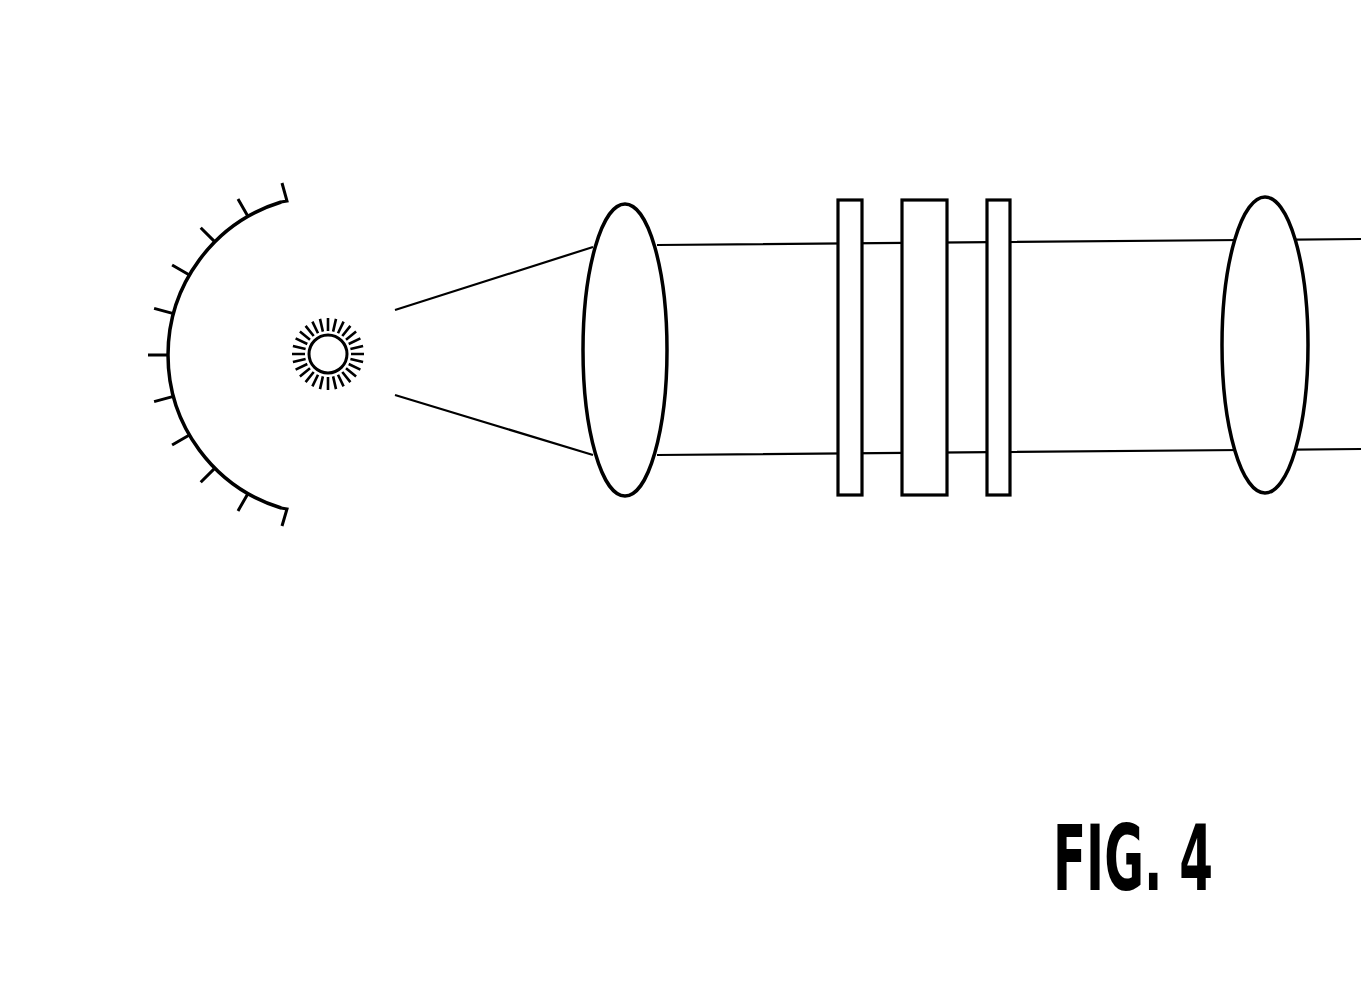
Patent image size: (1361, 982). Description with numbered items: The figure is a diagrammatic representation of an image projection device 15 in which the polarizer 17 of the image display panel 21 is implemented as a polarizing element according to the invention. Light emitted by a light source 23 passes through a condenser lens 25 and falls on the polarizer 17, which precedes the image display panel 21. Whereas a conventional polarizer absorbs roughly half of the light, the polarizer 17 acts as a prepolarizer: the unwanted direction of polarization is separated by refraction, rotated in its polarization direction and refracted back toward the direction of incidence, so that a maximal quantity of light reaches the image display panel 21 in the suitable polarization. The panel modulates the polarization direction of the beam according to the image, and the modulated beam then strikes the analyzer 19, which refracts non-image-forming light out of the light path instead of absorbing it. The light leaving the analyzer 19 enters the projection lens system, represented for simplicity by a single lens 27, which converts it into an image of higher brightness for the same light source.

The image projection device 15 is at (770, 163).
The polarizer 17 is at (849, 495).
The analyzer 19 is at (997, 495).
The image display panel 21 is at (917, 495).
The light source 23 is at (226, 600).
The condenser lens 25 is at (615, 495).
The lens 27 is at (1265, 493).